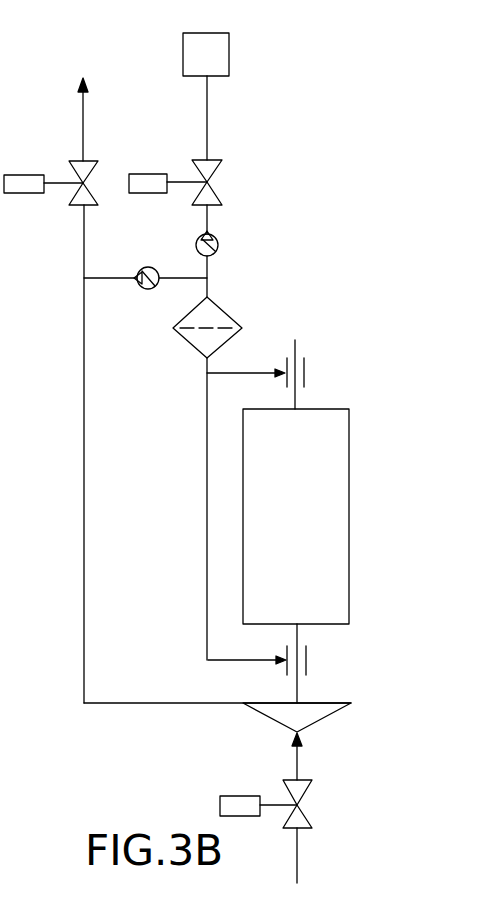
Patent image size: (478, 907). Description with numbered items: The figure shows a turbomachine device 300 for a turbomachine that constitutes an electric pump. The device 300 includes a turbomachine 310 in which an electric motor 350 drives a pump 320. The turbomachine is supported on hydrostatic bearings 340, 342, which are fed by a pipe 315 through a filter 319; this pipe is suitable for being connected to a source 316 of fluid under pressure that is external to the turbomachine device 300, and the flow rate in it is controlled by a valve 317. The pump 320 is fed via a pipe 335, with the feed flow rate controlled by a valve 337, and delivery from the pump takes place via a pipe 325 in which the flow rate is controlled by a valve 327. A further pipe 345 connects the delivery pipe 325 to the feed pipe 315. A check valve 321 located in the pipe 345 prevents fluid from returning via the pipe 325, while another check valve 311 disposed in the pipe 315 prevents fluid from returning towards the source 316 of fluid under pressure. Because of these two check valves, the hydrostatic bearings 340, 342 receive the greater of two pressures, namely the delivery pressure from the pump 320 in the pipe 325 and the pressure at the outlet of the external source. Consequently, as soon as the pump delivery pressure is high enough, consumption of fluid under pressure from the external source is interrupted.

The turbomachine device 300 is at (142, 730).
The turbomachine 310 is at (350, 538).
The check valve 311 is at (218, 238).
The pipe 315 is at (207, 103).
The source of fluid under pressure 316 is at (229, 58).
The valve 317 is at (193, 183).
The filter 319 is at (217, 318).
The pump 320 is at (308, 710).
The check valve 321 is at (147, 290).
The pipe 325 is at (84, 403).
The valve 327 is at (60, 184).
The pipe 335 is at (302, 849).
The valve 337 is at (270, 800).
The hydrostatic bearing 340 is at (306, 662).
The hydrostatic bearing 342 is at (305, 363).
The pipe 345 is at (113, 276).
The electric motor 350 is at (325, 440).